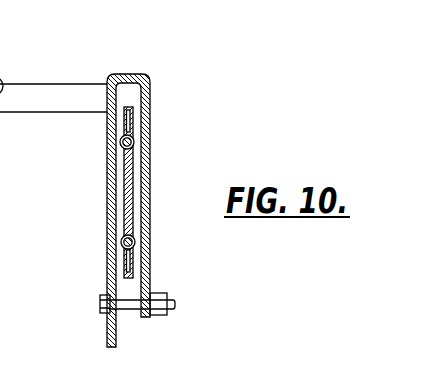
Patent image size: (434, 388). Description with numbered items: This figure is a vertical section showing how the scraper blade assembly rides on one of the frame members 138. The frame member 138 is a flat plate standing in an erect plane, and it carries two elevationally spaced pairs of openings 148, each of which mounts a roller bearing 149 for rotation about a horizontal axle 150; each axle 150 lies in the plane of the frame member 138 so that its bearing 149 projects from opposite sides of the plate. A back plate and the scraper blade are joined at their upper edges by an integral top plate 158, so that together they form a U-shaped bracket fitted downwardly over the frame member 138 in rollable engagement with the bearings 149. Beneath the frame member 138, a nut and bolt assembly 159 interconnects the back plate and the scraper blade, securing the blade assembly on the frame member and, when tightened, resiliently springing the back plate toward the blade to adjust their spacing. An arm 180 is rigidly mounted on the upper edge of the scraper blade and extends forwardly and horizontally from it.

The arm 180 is at (17, 93).
The top plate 158 is at (133, 73).
The frame member 138 is at (125, 182).
The openings 148 is at (134, 131).
The roller bearing 149 is at (134, 140).
The horizontal axle 150 is at (120, 141).
The nut and bolt assembly 159 is at (129, 303).